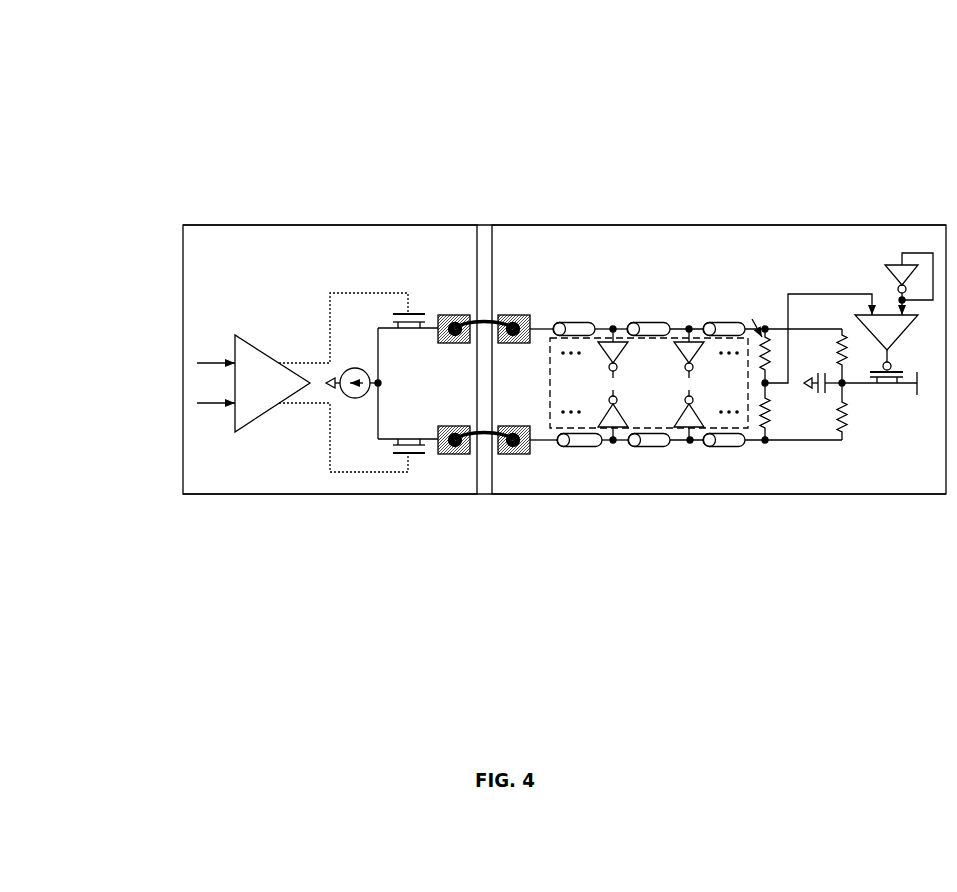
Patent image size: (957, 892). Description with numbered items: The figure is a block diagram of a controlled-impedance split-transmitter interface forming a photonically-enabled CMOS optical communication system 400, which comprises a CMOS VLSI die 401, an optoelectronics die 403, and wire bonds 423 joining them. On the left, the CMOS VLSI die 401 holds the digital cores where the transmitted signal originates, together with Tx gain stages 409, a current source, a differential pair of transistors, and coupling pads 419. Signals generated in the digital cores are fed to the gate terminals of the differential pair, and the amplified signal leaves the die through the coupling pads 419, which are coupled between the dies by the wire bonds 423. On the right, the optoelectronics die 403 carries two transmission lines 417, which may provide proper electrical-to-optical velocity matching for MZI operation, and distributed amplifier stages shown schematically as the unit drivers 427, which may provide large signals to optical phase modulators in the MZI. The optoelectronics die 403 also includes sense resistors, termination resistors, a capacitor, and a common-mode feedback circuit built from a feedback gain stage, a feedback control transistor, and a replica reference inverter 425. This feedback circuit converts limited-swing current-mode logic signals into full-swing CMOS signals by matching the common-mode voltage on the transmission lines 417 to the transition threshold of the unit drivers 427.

The photonically-enabled CMOS optical communication system 400 is at (145, 76).
The CMOS VLSI die 401 is at (418, 252).
The optoelectronics die 403 is at (802, 249).
The Tx gain stages 409 is at (270, 402).
The transmission lines 417 is at (747, 294).
The coupling pads 419 is at (512, 311).
The wire bonds 423 is at (487, 333).
The replica reference inverter 425 is at (890, 266).
The unit drivers 427 is at (667, 415).